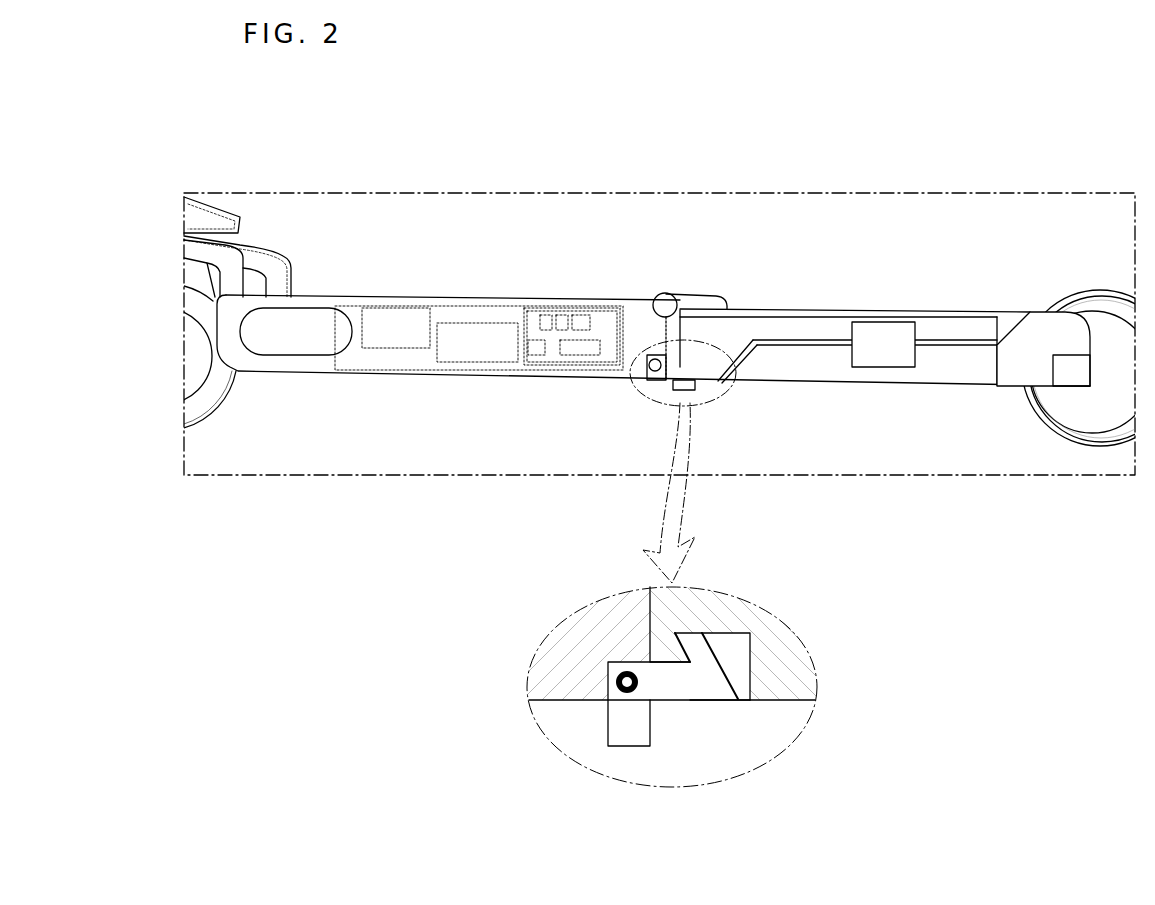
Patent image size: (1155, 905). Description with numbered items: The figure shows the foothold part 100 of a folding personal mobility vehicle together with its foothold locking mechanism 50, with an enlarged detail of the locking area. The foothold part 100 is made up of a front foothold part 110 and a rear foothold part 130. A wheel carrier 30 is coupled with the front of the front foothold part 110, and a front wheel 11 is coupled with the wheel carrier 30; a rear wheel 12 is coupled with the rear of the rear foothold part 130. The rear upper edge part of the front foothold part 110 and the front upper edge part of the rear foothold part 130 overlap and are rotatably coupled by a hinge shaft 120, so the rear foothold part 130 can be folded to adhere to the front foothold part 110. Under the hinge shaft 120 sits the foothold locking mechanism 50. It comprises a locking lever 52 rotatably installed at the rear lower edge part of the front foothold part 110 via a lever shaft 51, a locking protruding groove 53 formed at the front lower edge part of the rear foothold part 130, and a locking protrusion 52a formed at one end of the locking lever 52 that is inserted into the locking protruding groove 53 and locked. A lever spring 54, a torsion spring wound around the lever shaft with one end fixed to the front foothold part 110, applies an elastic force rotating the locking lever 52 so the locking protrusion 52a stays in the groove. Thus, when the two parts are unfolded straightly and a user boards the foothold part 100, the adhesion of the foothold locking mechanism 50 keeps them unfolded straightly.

The front wheel 11 is at (190, 412).
The rear wheel 12 is at (1078, 452).
The wheel carrier 30 is at (273, 270).
The foothold locking mechanism 50 is at (688, 703).
The lever shaft 51 is at (653, 383).
The locking lever 52 is at (683, 392).
The locking protrusion 52a is at (703, 665).
The locking protruding groove 53 is at (750, 686).
The lever spring 54 is at (628, 692).
The foothold part 100 is at (460, 380).
The front foothold part 110 is at (532, 316).
The hinge shaft 120 is at (666, 293).
The rear foothold part 130 is at (808, 325).